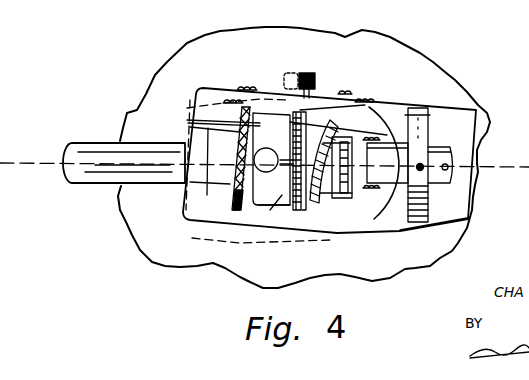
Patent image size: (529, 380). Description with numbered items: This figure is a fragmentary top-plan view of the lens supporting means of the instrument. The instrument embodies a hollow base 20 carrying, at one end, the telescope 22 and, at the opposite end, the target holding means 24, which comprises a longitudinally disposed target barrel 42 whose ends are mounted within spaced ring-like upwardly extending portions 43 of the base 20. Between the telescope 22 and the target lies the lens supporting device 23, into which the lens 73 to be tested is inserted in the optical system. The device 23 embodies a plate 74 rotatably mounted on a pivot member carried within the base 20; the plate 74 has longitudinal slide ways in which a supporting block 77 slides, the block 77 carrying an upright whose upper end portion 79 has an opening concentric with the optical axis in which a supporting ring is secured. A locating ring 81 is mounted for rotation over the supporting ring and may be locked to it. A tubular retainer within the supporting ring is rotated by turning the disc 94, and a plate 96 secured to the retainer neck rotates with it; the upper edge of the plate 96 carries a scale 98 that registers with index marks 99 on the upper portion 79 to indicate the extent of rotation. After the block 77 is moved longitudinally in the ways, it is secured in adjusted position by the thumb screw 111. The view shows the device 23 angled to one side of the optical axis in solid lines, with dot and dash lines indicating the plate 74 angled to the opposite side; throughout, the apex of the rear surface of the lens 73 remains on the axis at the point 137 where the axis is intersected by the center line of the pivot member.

The hollow base 20 is at (354, 37).
The telescope 22 is at (89, 141).
The lens supporting device 23 is at (268, 216).
The target holding means 24 is at (455, 149).
The target barrel 42 is at (465, 200).
The ring-like upwardly extending portions 43 is at (420, 118).
The lens 73 is at (327, 122).
The plate 74 is at (200, 213).
The supporting block 77 is at (378, 192).
The upper end portion of upright 79 is at (280, 193).
The locating ring 81 is at (263, 118).
The disc 94 is at (234, 186).
The plate 96 is at (300, 203).
The scale 98 is at (292, 198).
The index marks 99 is at (281, 174).
The thumb screw 111 is at (302, 72).
The point 137 is at (327, 206).